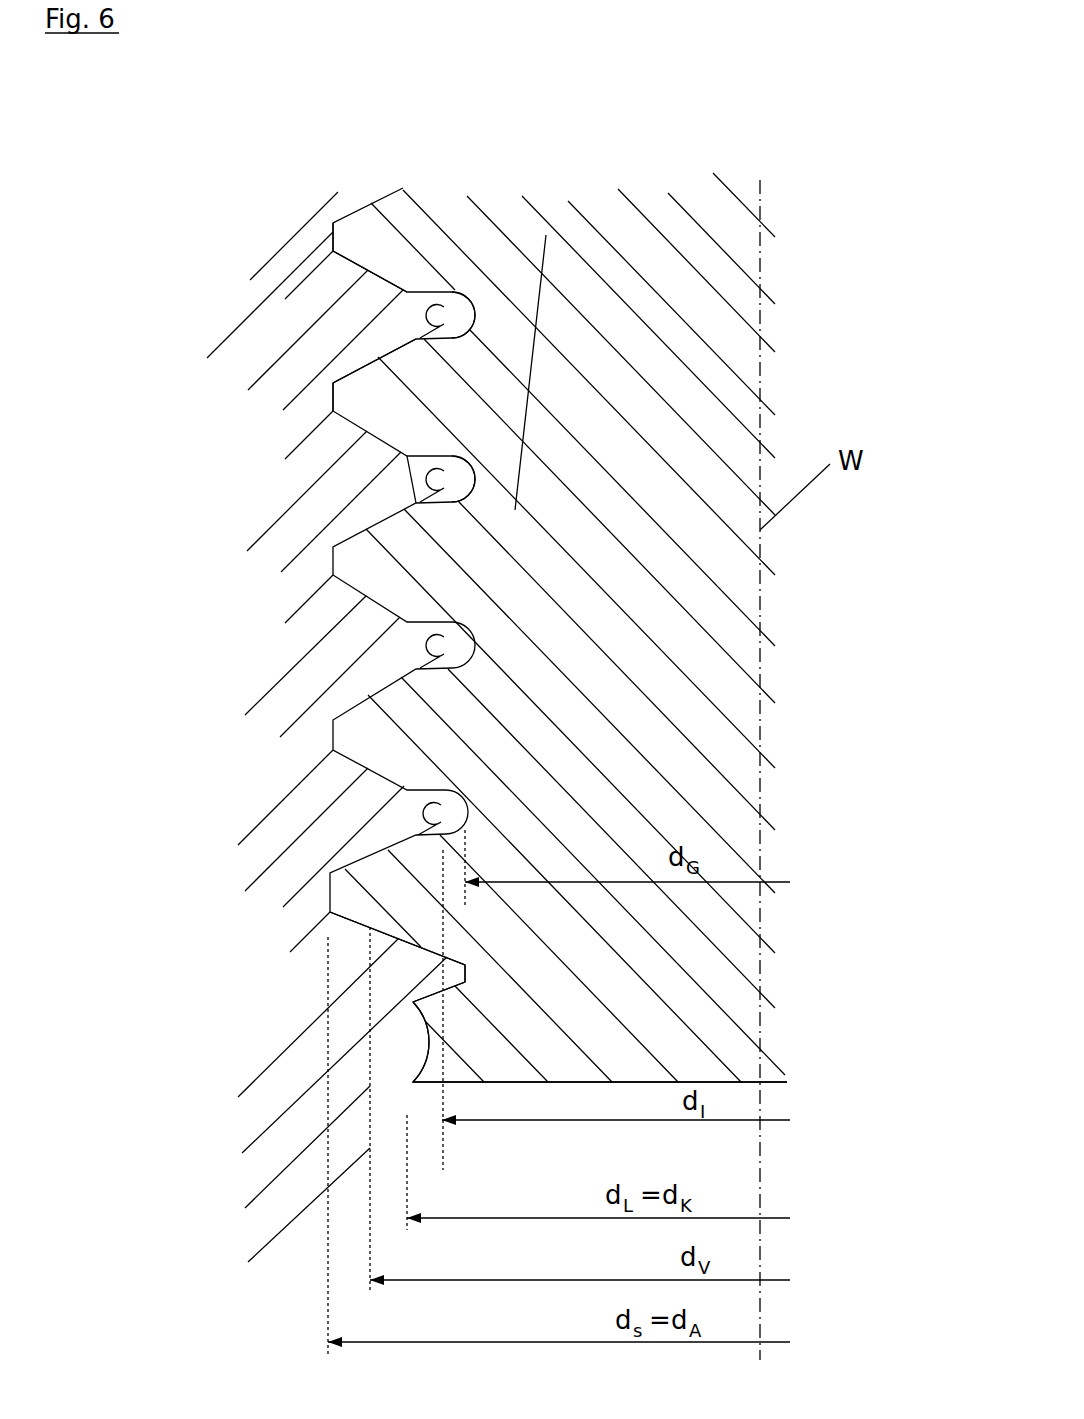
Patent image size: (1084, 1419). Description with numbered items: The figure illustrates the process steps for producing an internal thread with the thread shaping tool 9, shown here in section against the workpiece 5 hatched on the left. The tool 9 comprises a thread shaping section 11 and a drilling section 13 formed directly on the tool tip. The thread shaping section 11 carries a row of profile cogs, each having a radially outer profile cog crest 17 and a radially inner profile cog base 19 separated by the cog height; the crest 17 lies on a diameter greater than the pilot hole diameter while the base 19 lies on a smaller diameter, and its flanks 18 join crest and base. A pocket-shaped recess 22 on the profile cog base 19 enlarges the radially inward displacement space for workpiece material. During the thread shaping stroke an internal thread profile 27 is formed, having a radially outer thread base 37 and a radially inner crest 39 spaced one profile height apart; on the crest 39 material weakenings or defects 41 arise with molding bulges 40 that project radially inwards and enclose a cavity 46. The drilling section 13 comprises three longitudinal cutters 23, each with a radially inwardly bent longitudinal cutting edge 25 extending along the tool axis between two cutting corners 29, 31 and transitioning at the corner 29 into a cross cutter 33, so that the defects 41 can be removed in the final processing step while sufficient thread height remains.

The first component (stator/housing) 5 is at (189, 702).
The thread shaping tool 9 is at (565, 544).
The thread shaping section 11 is at (580, 66).
The drilling section 13 is at (66, 880).
The profile cog crest 17 is at (333, 240).
The fin flank 18 is at (386, 277).
The profile cog base 19 is at (465, 340).
The pocket-shaped recess 22 is at (430, 447).
The longitudinal cutter 23 is at (124, 935).
The longitudinal cutting edge 25 is at (428, 1038).
The internal thread profile 27 is at (105, 365).
The cutting corner 29 is at (415, 1002).
The cutting corner 31 is at (413, 1080).
The cross cutter 33 is at (463, 966).
The thread base 37 is at (333, 387).
The crest 39 is at (420, 487).
The molding bulge 40 is at (515, 510).
The material weakenings or defects 41 is at (780, 66).
The cavity 46 is at (437, 495).